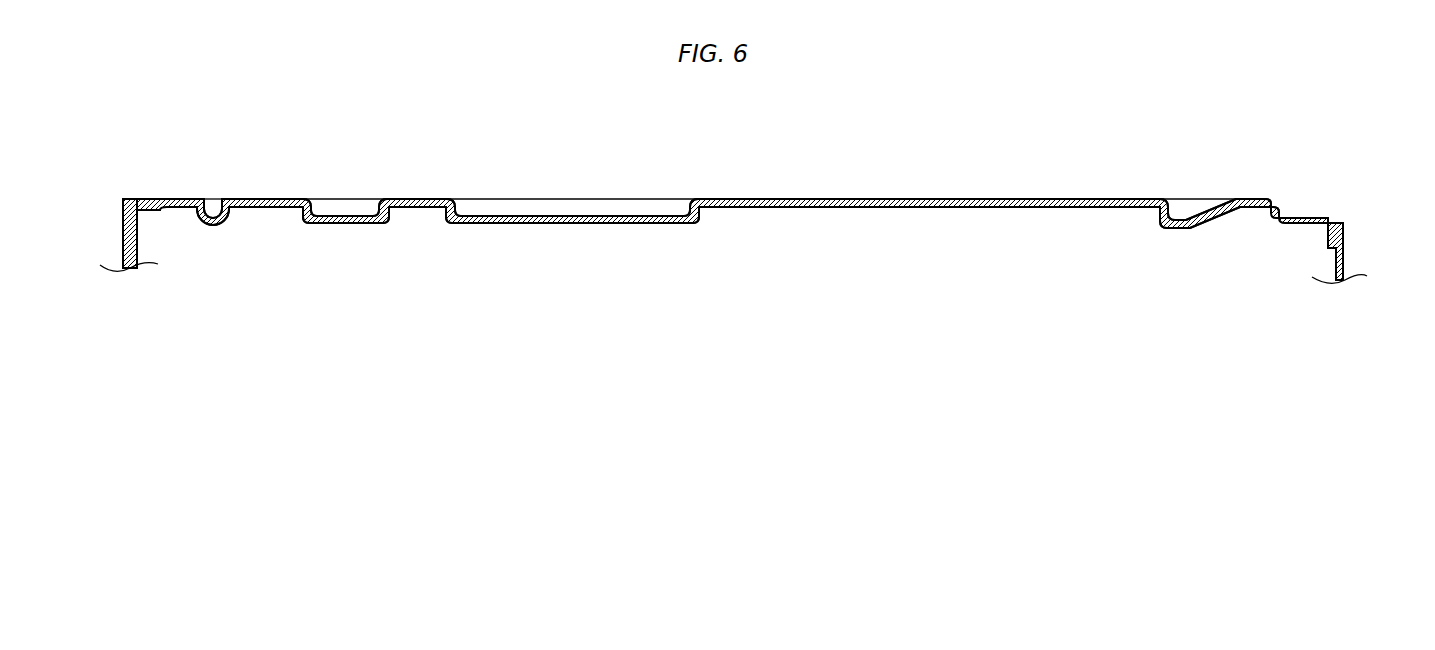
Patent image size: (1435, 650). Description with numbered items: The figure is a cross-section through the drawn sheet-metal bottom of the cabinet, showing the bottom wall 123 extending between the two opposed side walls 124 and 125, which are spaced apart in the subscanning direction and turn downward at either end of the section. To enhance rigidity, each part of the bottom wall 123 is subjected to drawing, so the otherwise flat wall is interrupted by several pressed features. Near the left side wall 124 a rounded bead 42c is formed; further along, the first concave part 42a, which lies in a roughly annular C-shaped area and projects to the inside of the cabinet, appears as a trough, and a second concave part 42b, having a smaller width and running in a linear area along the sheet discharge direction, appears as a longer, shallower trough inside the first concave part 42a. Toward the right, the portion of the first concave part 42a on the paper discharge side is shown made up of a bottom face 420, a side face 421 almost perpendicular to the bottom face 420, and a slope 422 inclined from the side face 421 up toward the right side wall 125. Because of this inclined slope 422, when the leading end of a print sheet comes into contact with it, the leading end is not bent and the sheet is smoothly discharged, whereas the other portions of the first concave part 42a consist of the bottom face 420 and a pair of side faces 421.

The bottom wall 123 is at (843, 198).
The side wall 124 is at (122, 219).
The side wall 125 is at (1345, 230).
The first concave part 42a is at (348, 213).
The second concave part 42b is at (568, 214).
The bead portion 42c is at (213, 217).
The bottom face 420 is at (1183, 215).
The side face 421 is at (1168, 201).
The slope 422 is at (1233, 203).